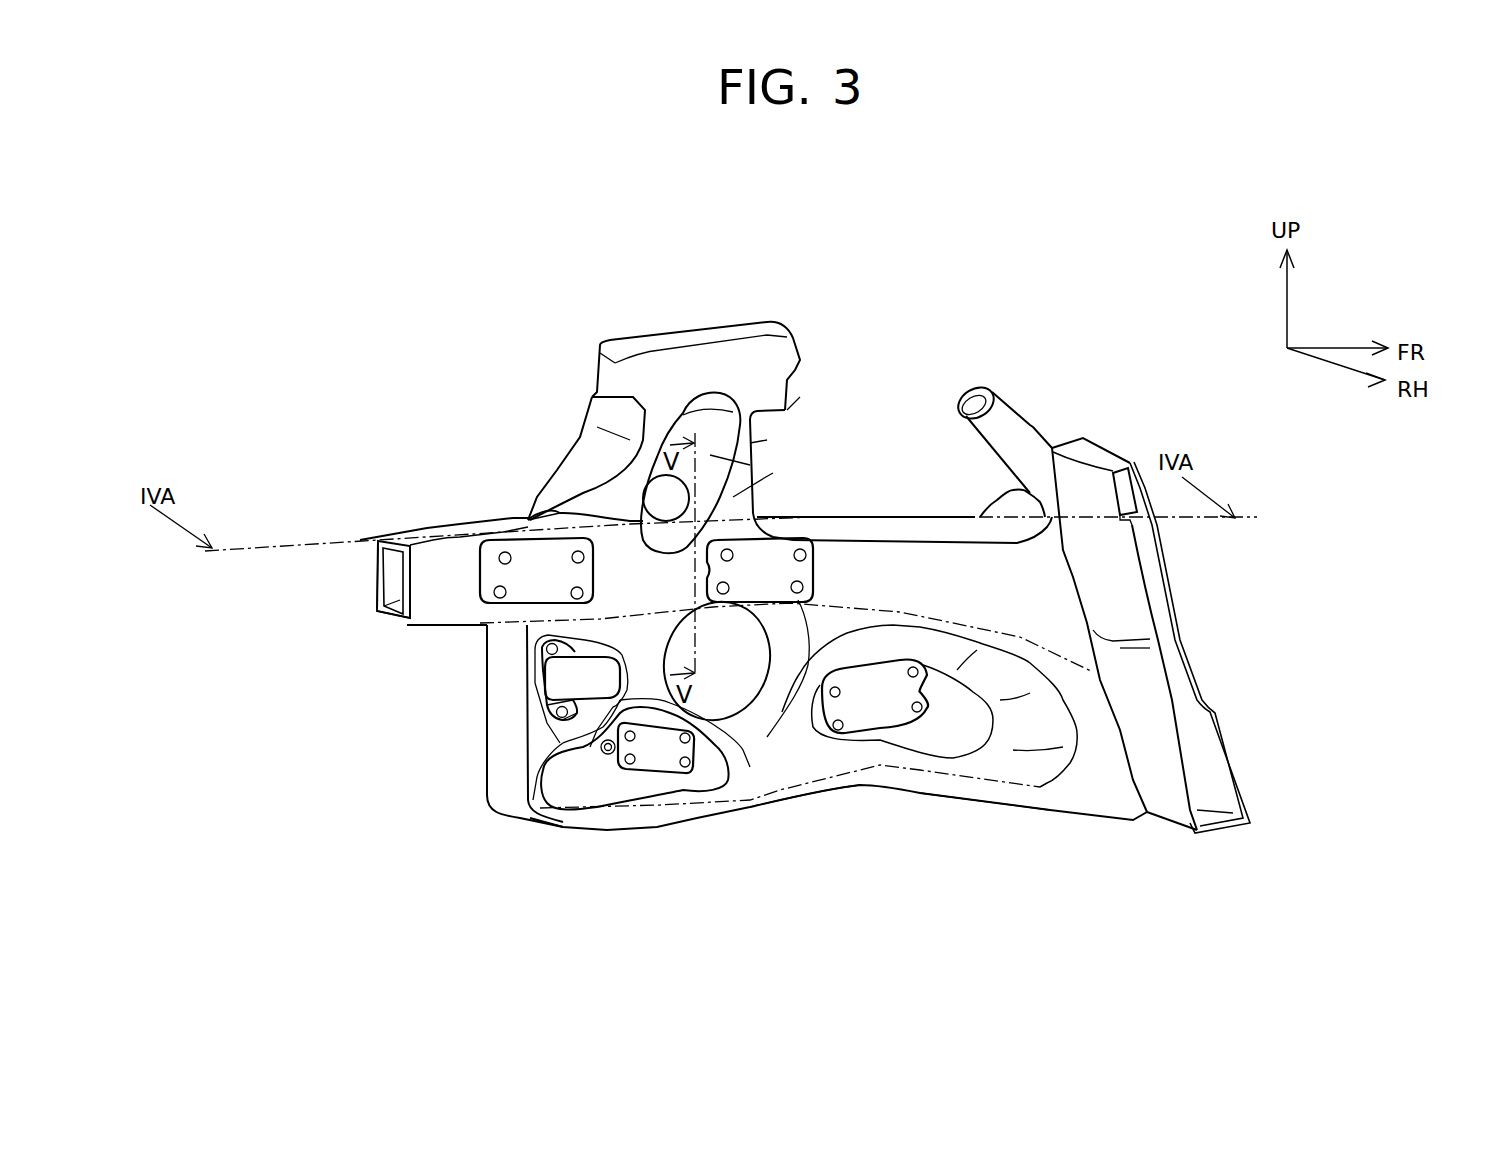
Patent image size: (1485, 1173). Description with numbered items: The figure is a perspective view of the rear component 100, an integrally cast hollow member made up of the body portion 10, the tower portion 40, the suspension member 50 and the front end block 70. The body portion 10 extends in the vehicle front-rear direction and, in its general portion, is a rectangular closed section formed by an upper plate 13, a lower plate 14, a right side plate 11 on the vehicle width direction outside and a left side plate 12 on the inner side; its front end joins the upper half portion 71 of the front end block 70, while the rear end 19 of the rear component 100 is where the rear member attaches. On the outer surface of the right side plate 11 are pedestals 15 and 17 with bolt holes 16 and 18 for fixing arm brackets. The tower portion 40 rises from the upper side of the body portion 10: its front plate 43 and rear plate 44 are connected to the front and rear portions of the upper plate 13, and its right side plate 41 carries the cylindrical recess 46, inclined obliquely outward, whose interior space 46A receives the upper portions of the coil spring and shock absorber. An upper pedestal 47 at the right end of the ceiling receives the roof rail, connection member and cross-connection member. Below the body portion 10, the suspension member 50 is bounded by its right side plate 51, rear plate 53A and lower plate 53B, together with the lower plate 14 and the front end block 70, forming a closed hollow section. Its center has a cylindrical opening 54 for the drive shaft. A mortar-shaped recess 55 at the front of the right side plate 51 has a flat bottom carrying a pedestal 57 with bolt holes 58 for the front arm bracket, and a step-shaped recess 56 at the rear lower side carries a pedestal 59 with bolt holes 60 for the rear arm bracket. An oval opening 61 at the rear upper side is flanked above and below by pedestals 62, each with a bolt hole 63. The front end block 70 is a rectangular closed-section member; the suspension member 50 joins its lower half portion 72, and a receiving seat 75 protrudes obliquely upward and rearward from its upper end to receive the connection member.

The rear component 100 is at (322, 322).
The body portion 10 is at (372, 590).
The right side plate 11 is at (410, 578).
The left side plate 12 is at (377, 588).
The upper plate 13 is at (397, 538).
The lower plate 14 is at (383, 620).
The pedestal 15 is at (733, 497).
The bolt hole 16 is at (763, 565).
The pedestal 17 is at (537, 560).
The bolt hole 18 is at (500, 550).
The rear end 19 is at (380, 614).
The tower portion 40 is at (578, 437).
The right side plate 41 is at (710, 455).
The front plate 43 is at (787, 410).
The rear plate 44 is at (580, 475).
The recess 46 is at (750, 443).
The space 46A is at (710, 433).
The upper pedestal 47 is at (690, 333).
The suspension member 50 is at (575, 833).
The right side plate 51 is at (910, 780).
The rear plate 53A is at (507, 737).
The lower plate 53B is at (823, 783).
The cylindrical opening 54 is at (737, 690).
The recess 55 is at (973, 740).
The recess 56 is at (597, 783).
The pedestal 57 is at (863, 710).
The bolt holes 58 is at (923, 710).
The pedestal 59 is at (653, 758).
The bolt holes 60 is at (690, 767).
The oval opening 61 is at (557, 672).
The pedestal 62 is at (557, 703).
The bolt hole 63 is at (555, 713).
The front end block 70 is at (1178, 600).
The upper half portion 71 is at (1167, 550).
The lower half portion 72 is at (1227, 743).
The receiving seat 75 is at (1048, 440).